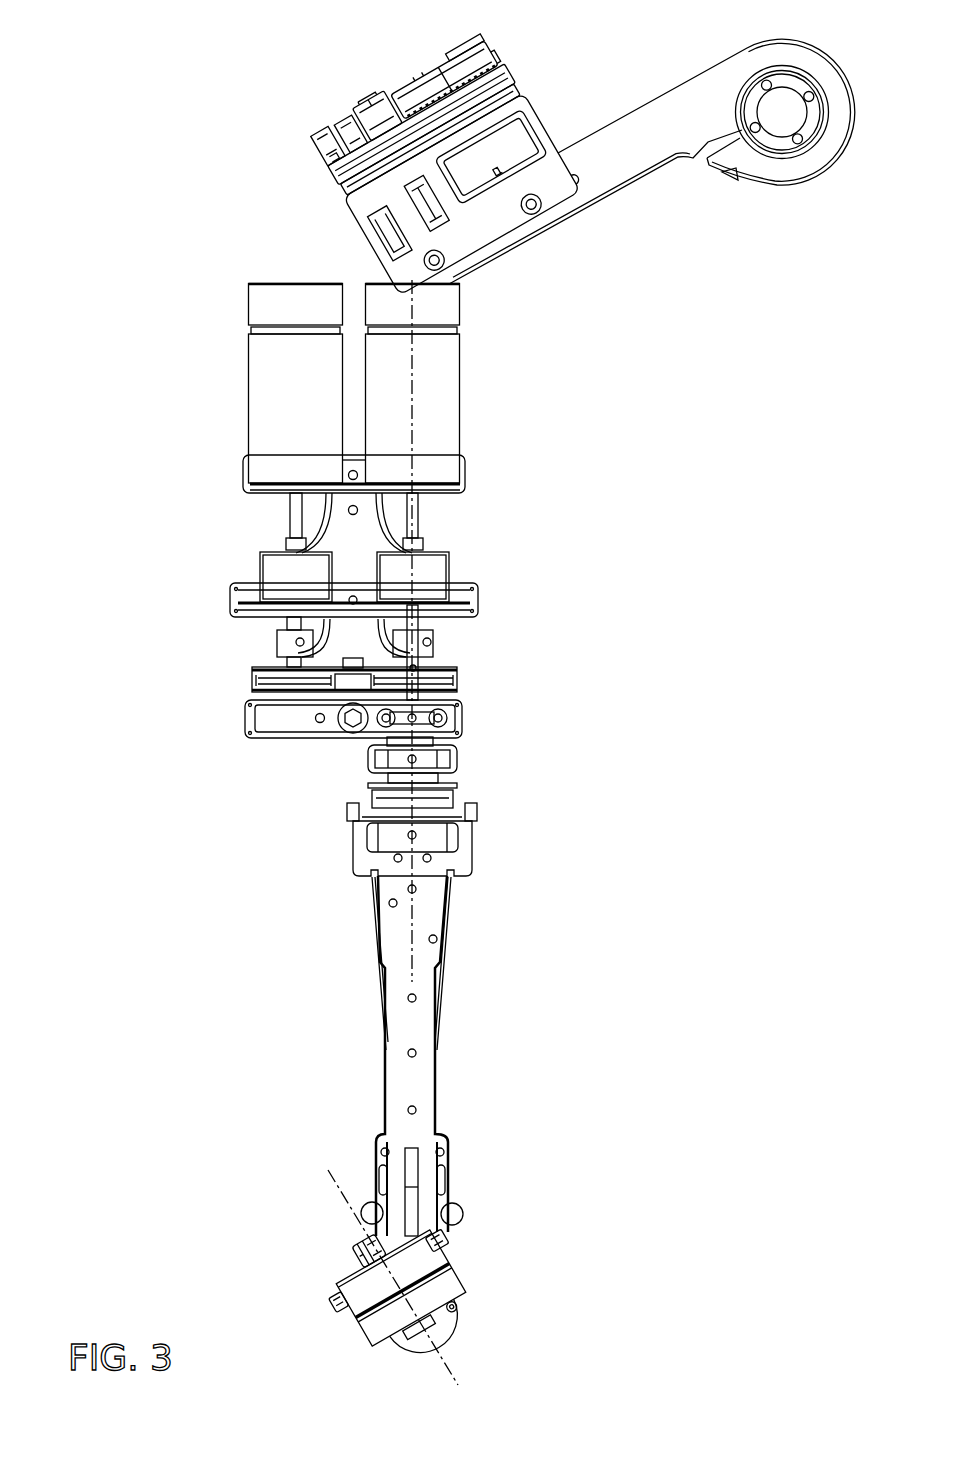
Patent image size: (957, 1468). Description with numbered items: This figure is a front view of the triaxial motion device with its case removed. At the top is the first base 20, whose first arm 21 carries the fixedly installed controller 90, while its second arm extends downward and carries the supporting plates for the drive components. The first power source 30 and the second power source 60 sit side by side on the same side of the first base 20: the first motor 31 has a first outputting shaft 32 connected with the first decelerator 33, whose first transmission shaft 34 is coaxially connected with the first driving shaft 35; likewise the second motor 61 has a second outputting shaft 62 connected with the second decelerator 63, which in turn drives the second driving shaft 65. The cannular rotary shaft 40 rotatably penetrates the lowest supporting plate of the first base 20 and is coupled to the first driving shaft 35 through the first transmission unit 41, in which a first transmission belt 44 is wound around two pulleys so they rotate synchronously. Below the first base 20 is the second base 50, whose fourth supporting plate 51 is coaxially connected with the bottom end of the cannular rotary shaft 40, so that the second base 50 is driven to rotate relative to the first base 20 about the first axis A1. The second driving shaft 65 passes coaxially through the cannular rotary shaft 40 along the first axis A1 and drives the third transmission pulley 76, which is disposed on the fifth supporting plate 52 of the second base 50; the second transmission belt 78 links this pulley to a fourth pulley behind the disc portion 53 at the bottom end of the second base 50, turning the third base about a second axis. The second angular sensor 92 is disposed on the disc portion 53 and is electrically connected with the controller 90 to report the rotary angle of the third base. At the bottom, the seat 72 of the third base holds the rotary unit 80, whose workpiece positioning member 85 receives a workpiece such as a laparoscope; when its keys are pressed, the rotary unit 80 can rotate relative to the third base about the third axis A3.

The first base 20 is at (652, 154).
The first arm 21 is at (640, 144).
The first power source 30 is at (258, 425).
The first motor 31 is at (275, 350).
The first outputting shaft 32 is at (293, 515).
The first decelerator 33 is at (315, 568).
The first transmission shaft 34 is at (298, 622).
The first driving shaft 35 is at (285, 642).
The cannular rotary shaft 40 is at (433, 740).
The first transmission unit 41 is at (369, 662).
The first transmission belt 44 is at (272, 678).
The second base 50 is at (415, 1056).
The fourth supporting plate 51 is at (443, 759).
The fifth supporting plate 52 is at (448, 860).
The disc portion 53 is at (443, 1330).
The second power source 60 is at (467, 490).
The second motor 61 is at (445, 352).
The second outputting shaft 62 is at (418, 510).
The second decelerator 63 is at (437, 568).
The second driving shaft 65 is at (430, 648).
The seat 72 is at (440, 1285).
The third transmission pulley 76 is at (460, 788).
The second transmission belt 78 is at (448, 990).
The rotary unit 80 is at (393, 1293).
The workpiece positioning member 85 is at (328, 1244).
The controller 90 is at (391, 79).
The second angular sensor 92 is at (414, 1159).
The first axis A1 is at (412, 920).
The third axis A3 is at (328, 1170).